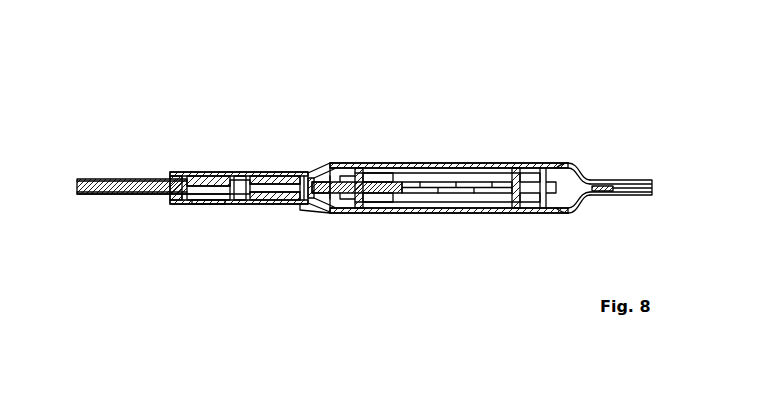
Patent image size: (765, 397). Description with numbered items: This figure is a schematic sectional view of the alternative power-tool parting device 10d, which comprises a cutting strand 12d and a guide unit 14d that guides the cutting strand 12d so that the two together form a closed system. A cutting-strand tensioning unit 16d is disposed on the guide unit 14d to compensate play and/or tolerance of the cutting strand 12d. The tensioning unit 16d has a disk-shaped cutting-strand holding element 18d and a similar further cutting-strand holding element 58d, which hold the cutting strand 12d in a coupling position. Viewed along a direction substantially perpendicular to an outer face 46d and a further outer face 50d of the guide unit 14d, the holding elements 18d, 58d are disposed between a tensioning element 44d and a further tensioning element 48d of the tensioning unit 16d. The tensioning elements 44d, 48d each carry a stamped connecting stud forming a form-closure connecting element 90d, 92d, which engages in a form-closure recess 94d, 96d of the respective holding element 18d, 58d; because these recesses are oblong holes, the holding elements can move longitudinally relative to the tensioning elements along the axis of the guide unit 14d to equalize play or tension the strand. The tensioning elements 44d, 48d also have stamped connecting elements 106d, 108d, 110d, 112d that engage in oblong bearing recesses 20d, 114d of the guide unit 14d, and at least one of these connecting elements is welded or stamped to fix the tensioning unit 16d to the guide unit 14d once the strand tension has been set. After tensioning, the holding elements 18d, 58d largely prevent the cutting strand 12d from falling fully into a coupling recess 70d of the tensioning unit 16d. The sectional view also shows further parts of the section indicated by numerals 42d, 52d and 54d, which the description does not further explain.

The power-tool parting device 10d is at (111, 108).
The cutting strand 12d is at (534, 163).
The guide unit 14d is at (135, 178).
The cutting-strand tensioning unit 16d is at (612, 118).
The cutting-strand holding element 18d is at (514, 163).
The bearing recess 20d is at (174, 171).
The shaft 42d is at (670, 178).
The tensioning element 44d is at (571, 214).
The outer face 46d is at (100, 196).
The further tensioning element 48d is at (568, 163).
The further outer face 50d is at (98, 178).
The piston 52d is at (330, 165).
The sleeve 54d is at (388, 208).
The further cutting-strand holding element 58d is at (518, 210).
The coupling recess 70d is at (454, 163).
The form-closure connecting element 90d is at (362, 208).
The form-closure connecting element 92d is at (360, 163).
The form-closure recess 94d is at (336, 210).
The form-closure recess 96d is at (392, 163).
The connecting element 106d is at (200, 202).
The connecting element 108d is at (206, 182).
The connecting element 110d is at (294, 206).
The connecting element 112d is at (304, 168).
The bearing recess 114d is at (246, 171).